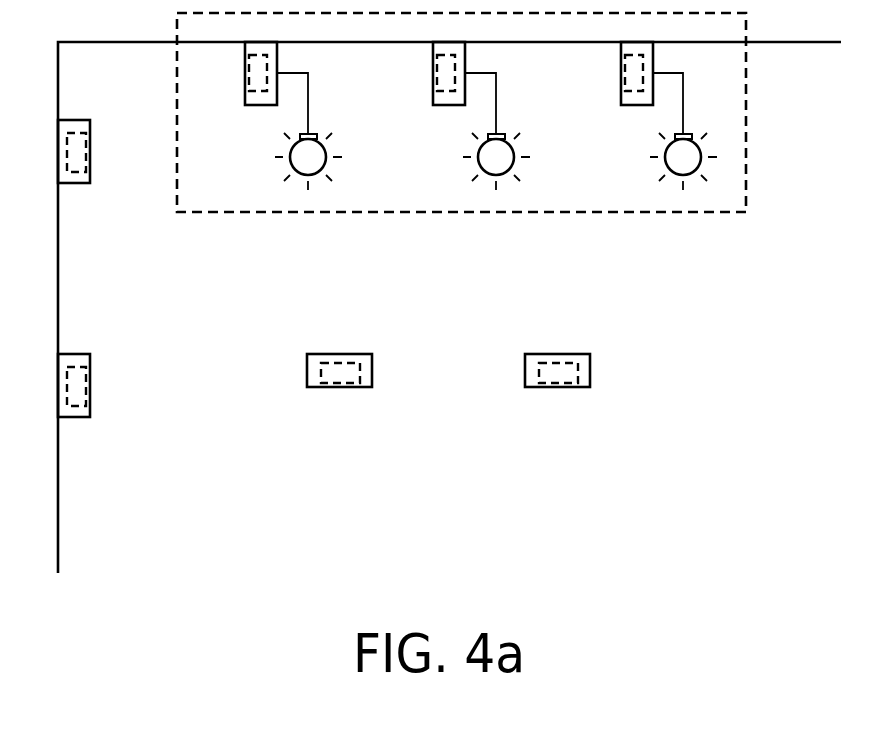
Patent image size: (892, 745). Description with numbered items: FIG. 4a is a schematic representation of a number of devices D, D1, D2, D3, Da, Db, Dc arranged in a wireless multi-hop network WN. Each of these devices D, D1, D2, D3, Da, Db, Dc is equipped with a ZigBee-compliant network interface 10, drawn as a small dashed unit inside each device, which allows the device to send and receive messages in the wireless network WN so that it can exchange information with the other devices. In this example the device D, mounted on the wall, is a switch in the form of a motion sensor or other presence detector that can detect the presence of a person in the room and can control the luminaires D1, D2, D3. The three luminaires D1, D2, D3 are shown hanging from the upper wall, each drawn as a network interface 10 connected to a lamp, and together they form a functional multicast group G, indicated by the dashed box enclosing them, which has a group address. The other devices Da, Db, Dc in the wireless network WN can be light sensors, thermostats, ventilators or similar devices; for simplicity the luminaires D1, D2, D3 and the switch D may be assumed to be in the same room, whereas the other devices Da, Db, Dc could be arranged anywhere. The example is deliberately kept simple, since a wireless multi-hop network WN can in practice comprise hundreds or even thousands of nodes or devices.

The network interface 10 is at (250, 74).
The luminaire D1 is at (250, 106).
The luminaire D2 is at (438, 106).
The luminaire D3 is at (626, 106).
The device Da is at (75, 184).
The device Db is at (340, 354).
The device Dc is at (558, 354).
The switch D is at (78, 354).
The functional multicast group G is at (746, 113).
The wireless network WN is at (529, 508).